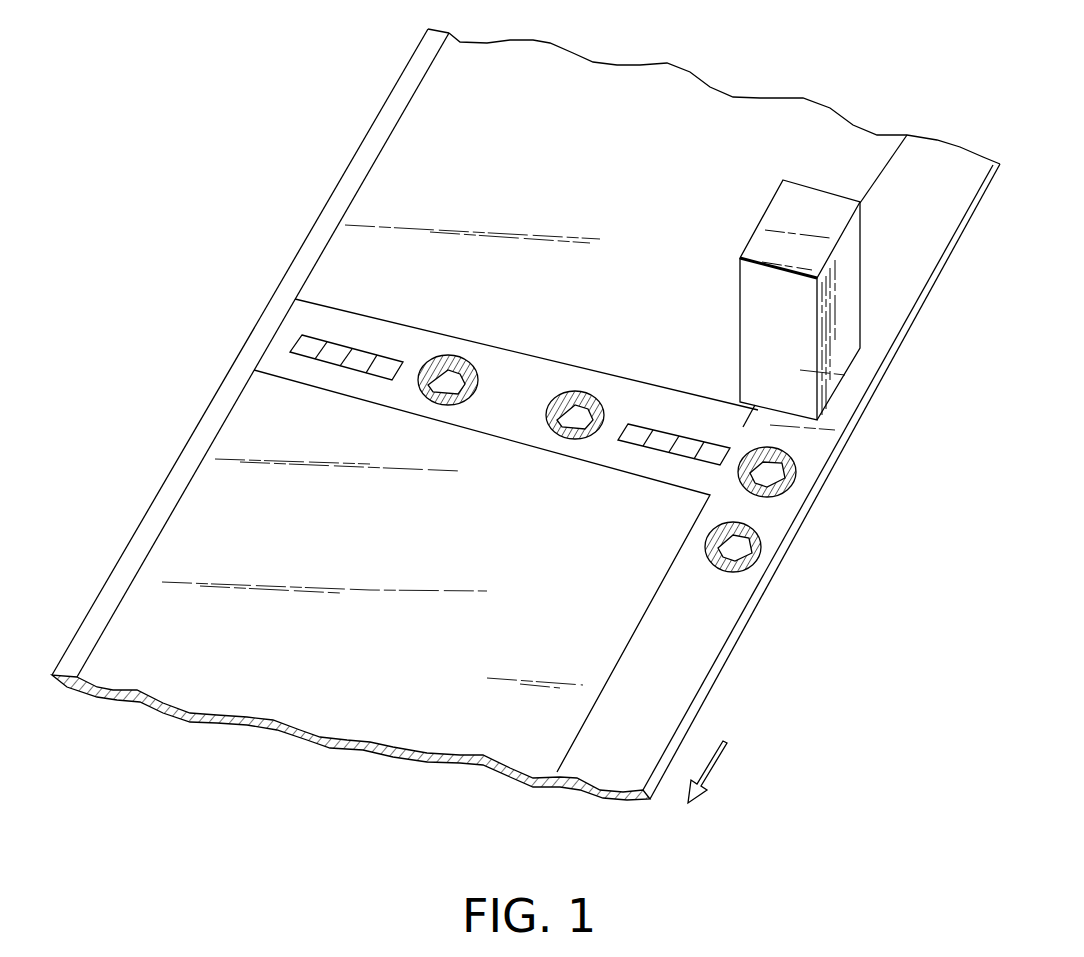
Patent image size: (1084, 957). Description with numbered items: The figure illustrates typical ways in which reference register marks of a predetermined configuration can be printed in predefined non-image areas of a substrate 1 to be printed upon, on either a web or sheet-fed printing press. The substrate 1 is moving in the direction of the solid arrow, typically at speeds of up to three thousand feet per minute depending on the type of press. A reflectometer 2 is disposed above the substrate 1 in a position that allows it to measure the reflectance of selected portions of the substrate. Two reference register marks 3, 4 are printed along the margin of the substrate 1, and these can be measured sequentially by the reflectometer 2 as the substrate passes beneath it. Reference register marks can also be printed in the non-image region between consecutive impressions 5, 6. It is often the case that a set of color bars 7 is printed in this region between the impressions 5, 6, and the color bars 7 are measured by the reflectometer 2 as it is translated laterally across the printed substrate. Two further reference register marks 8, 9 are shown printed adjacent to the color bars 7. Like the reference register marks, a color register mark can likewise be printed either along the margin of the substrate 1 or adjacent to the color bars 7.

The substrate 1 is at (625, 88).
The reflectometer 2 is at (811, 213).
The reference register mark 3 is at (790, 469).
The reference register mark 4 is at (762, 543).
The impression 5 is at (375, 163).
The impression 6 is at (190, 481).
The set of color bars 7 is at (303, 342).
The reference register mark 8 is at (580, 396).
The reference register mark 9 is at (443, 366).